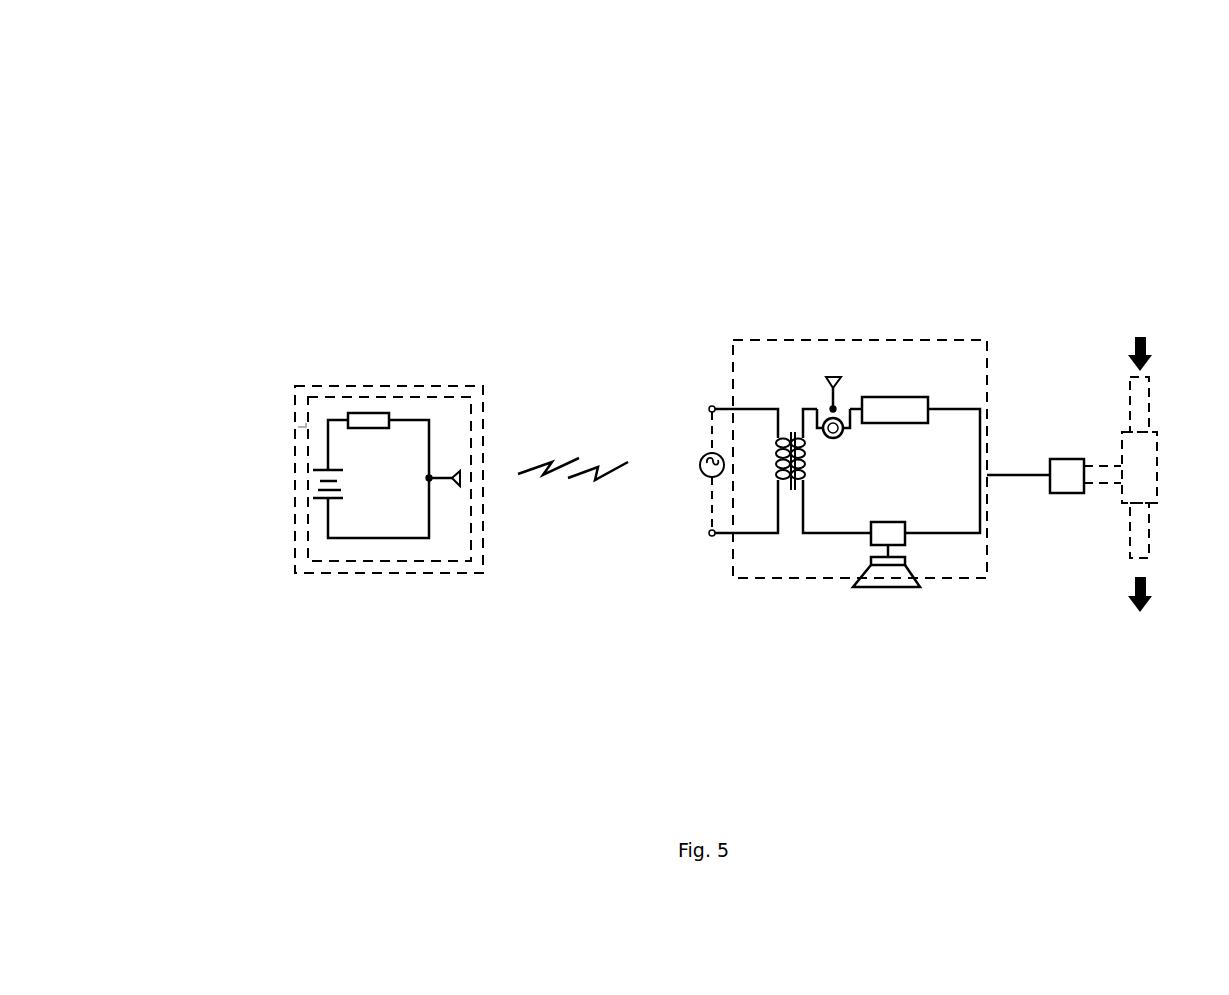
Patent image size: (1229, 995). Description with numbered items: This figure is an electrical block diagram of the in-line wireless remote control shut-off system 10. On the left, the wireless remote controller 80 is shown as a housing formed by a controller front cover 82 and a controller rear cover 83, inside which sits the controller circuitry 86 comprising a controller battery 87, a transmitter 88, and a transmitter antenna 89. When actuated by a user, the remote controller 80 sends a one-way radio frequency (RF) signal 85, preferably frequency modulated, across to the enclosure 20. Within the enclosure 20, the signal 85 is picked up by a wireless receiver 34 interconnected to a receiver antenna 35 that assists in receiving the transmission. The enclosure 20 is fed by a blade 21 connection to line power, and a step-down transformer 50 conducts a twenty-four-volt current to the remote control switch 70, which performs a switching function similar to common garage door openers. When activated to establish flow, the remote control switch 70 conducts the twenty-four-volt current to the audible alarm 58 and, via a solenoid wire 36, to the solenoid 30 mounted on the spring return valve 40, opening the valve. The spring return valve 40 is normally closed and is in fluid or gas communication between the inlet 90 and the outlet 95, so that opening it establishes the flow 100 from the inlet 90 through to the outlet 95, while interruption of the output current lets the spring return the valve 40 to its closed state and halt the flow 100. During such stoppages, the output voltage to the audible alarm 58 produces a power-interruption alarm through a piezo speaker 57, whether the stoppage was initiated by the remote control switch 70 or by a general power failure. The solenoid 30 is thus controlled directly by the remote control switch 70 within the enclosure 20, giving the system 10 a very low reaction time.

The in-line wireless remote control shut-off system 10 is at (214, 130).
The wireless remote controller 80 is at (243, 333).
The controller front cover 82 is at (389, 449).
The controller rear cover 83 is at (420, 386).
The controller circuitry 86 is at (323, 397).
The transmitter 88 is at (365, 420).
The controller battery 87 is at (321, 495).
The transmitter antenna 89 is at (463, 477).
The radio frequency (RF) signal 85 is at (598, 466).
The enclosure 20 is at (775, 338).
The blade 21 is at (712, 533).
The transformer 50 is at (805, 428).
The wireless receiver 34 is at (833, 376).
The receiver antenna 35 is at (841, 437).
The remote control switch 70 is at (884, 408).
The audible alarm 58 is at (880, 532).
The speaker 57 is at (880, 576).
The solenoid wire 36 is at (1016, 475).
The solenoid 30 is at (1068, 480).
The spring return valve 40 is at (1150, 462).
The inlet 90 is at (1150, 400).
The outlet 95 is at (1150, 532).
The flow 100 is at (1148, 345).